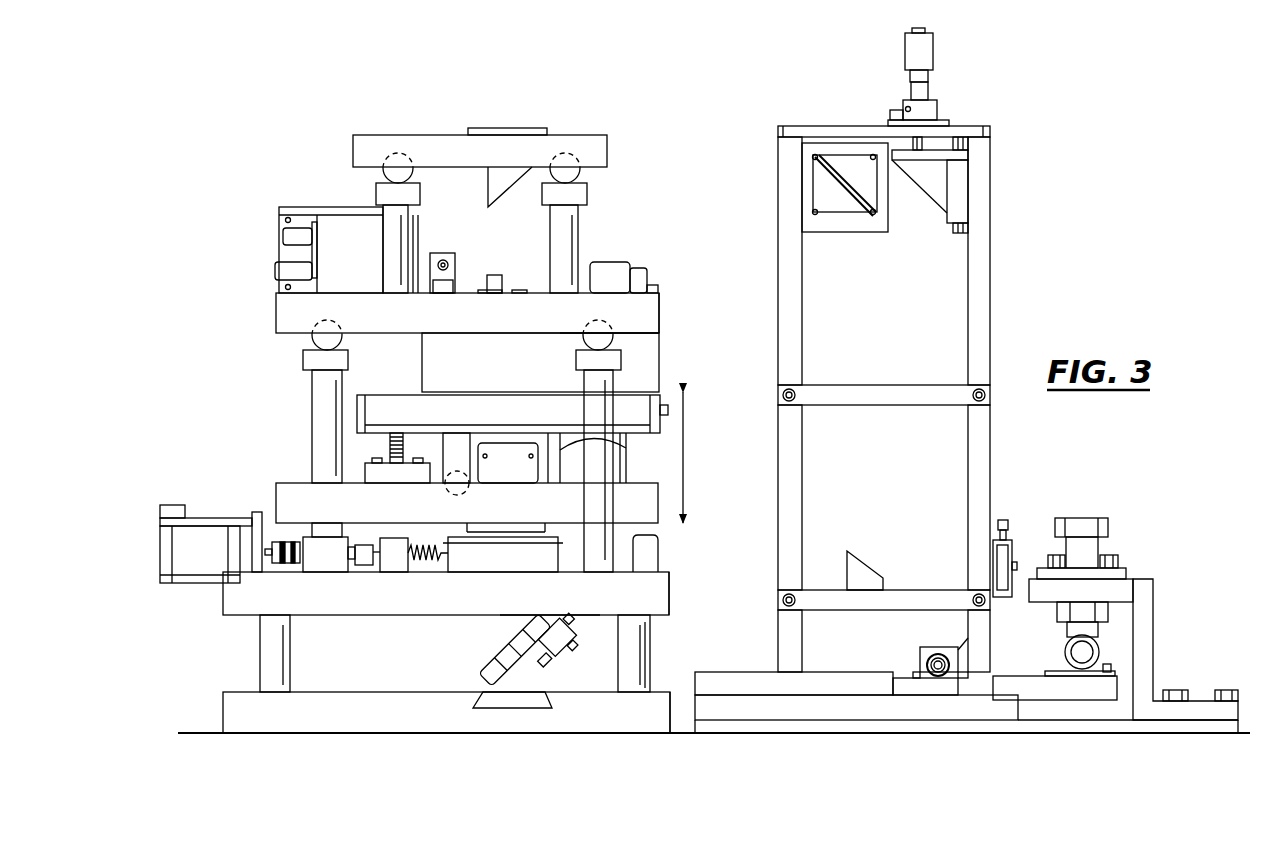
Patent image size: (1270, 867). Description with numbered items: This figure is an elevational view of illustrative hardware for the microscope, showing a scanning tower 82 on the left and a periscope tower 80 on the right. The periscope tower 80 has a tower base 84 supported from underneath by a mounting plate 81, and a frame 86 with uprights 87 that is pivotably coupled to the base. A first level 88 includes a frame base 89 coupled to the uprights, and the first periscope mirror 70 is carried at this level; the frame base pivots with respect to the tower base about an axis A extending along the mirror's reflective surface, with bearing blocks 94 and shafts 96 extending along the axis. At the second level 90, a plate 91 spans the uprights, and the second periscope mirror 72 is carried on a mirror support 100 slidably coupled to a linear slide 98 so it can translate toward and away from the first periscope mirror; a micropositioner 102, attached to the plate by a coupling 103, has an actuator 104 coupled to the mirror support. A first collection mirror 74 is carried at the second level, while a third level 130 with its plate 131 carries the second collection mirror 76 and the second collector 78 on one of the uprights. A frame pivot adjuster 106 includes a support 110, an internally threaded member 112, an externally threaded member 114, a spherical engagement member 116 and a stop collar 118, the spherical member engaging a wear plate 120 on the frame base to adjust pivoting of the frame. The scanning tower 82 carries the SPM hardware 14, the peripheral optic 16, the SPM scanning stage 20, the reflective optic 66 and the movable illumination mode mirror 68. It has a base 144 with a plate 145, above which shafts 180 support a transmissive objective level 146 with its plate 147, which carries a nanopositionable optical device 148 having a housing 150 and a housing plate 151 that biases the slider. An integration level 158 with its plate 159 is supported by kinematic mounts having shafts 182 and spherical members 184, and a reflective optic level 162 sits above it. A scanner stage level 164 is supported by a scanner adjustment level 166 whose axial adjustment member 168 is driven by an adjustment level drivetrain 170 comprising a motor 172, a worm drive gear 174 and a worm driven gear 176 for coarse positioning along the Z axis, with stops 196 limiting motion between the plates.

The SPM hardware 14 is at (522, 268).
The peripheral optic 16 is at (415, 375).
The SPM scanning stage 20 is at (380, 410).
The reflective optic 66 is at (480, 181).
The movable illumination mode mirror 68 is at (500, 637).
The first periscope mirror 70 is at (952, 640).
The second periscope mirror 72 is at (918, 204).
The first collection mirror 74 is at (838, 225).
The second collection mirror 76 is at (838, 562).
The second collector 78 is at (1014, 530).
The periscope tower 80 is at (1052, 75).
The mounting plate 81 is at (1130, 722).
The scanning tower 82 is at (300, 140).
The tower base 84 is at (1028, 722).
The frame 86 is at (778, 130).
The uprights 87 is at (786, 242).
The first level 88 is at (770, 668).
The frame base 89 is at (726, 670).
The second level 90 is at (1000, 202).
The second level plate 91 is at (985, 132).
The bearing blocks 94 is at (905, 680).
The shafts 96 is at (934, 674).
The linear slide 98 is at (957, 242).
The mirror support 100 is at (972, 150).
The micropositioner 102 is at (940, 48).
The coupling 103 is at (945, 110).
The actuator 104 is at (915, 143).
The frame pivot adjuster 106 is at (1150, 538).
The support 110 is at (1162, 610).
The internally threaded member 112 is at (1152, 563).
The externally threaded member 114 is at (1103, 527).
The spherical engagement member 116 is at (1065, 650).
The stop collar 118 is at (1058, 612).
The wear plate 120 is at (1112, 668).
The third level 130 is at (772, 572).
The third level plate 131 is at (930, 596).
The base 144 is at (215, 715).
The base plate 145 is at (634, 713).
The transmissive objective level 146 is at (218, 600).
The transmissive objective level plate 147 is at (648, 590).
The nanopositionable optical device 148 is at (538, 585).
The housing 150 is at (620, 443).
The housing plate 151 is at (532, 470).
The integration level 158 is at (268, 315).
The integration level plate 159 is at (650, 305).
The reflective optic level 162 is at (628, 150).
The scanner stage level 164 is at (672, 385).
The scanner adjustment level 166 is at (270, 505).
The axial adjustment member 168 is at (365, 478).
The adjustment level drivetrain 170 is at (150, 500).
The motor 172 is at (185, 555).
The worm drive gear 174 is at (395, 566).
The worm driven gear 176 is at (430, 562).
The shafts 180 is at (268, 635).
The shafts 182 is at (320, 390).
The spherical members 184 is at (318, 340).
The stops 196 is at (652, 541).
The axis A is at (944, 674).